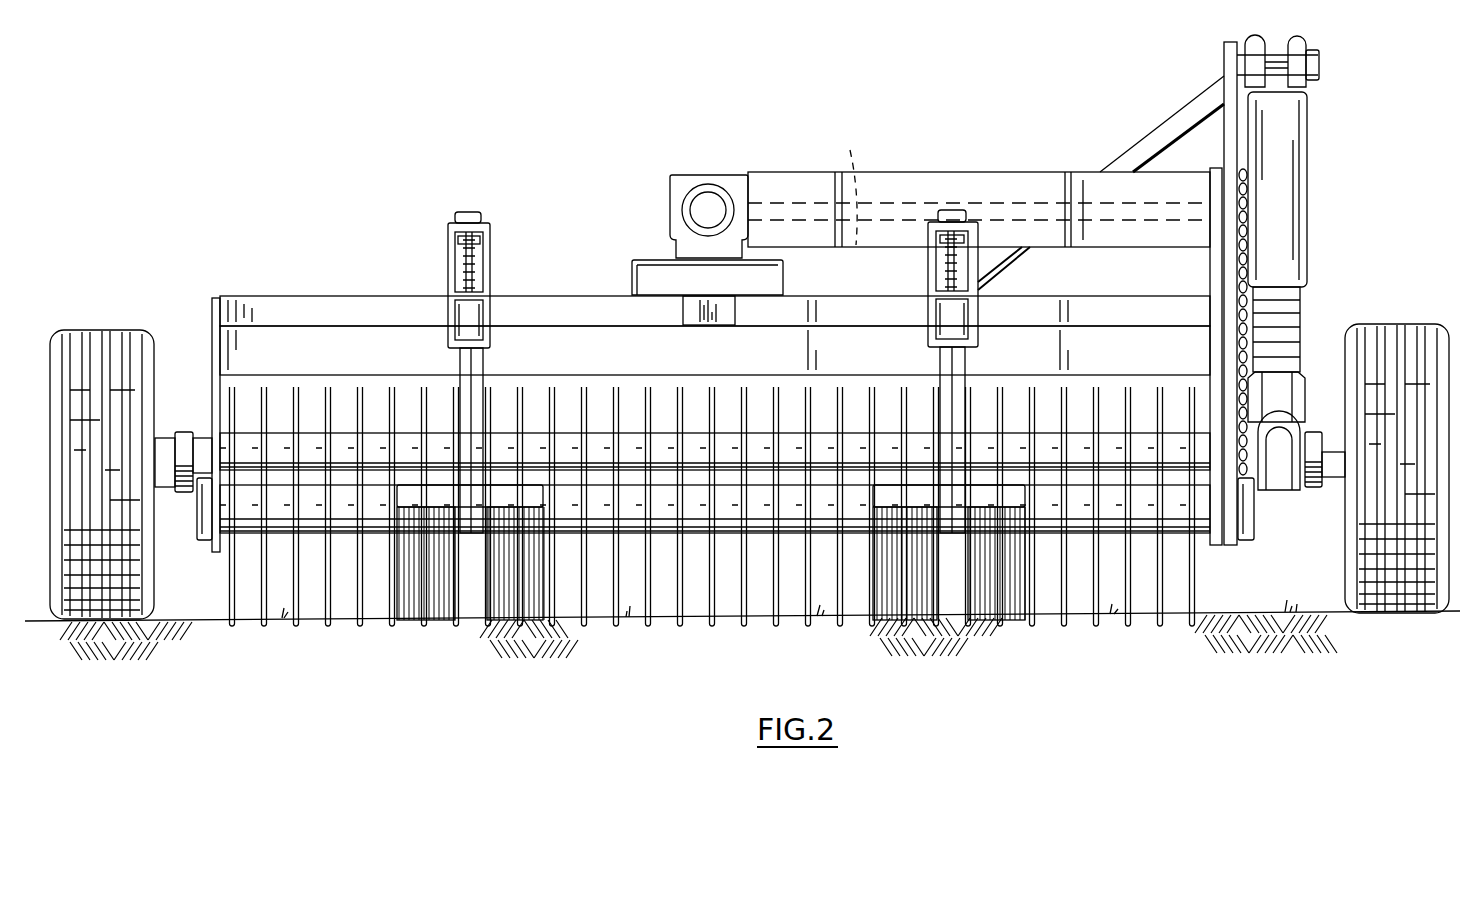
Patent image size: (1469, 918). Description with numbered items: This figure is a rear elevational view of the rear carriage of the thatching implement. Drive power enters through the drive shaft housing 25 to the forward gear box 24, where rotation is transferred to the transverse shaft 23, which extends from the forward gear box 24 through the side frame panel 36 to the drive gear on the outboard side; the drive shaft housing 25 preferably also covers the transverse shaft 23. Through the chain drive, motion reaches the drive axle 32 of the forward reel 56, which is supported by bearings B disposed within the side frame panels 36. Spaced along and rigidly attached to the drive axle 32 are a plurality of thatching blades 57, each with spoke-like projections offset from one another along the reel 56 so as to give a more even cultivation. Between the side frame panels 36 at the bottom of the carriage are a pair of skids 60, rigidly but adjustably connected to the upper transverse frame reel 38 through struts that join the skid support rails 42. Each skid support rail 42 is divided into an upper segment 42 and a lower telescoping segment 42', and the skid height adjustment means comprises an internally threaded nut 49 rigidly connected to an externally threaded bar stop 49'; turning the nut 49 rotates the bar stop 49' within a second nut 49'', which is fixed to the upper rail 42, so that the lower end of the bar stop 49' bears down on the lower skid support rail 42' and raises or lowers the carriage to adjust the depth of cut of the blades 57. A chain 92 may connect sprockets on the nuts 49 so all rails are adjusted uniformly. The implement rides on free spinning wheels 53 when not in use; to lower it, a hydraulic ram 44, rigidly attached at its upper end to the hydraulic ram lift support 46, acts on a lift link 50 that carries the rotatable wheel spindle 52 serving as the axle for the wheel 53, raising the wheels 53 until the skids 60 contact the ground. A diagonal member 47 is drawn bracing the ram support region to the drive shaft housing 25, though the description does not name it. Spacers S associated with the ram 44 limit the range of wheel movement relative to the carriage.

The transverse shaft 23 is at (848, 185).
The forward gear box 24 is at (680, 180).
The drive shaft housing 25 is at (965, 183).
The drive axle 32 is at (750, 545).
The side frame panel 36 is at (212, 318).
The upper transverse frame reel 38 is at (313, 300).
The skid support rail 42 is at (759, 285).
The lower skid support rail 42' is at (670, 389).
The hydraulic ram 44 is at (1310, 139).
The hydraulic ram lift support 46 is at (1320, 62).
The brace 47 is at (1150, 130).
The internally threaded nut 49 is at (710, 194).
The externally threaded bar stop 49' is at (676, 238).
The internally threaded nut 49'' is at (711, 215).
The lift link 50 is at (190, 465).
The wheel spindle 52 is at (167, 460).
The wheel 53 is at (145, 578).
The forward reel 56 is at (333, 646).
The thatching blade 57 is at (776, 628).
The skid 60 is at (439, 634).
The chain 92 is at (1250, 243).
The spacer S is at (1302, 322).
The bearing B is at (200, 540).